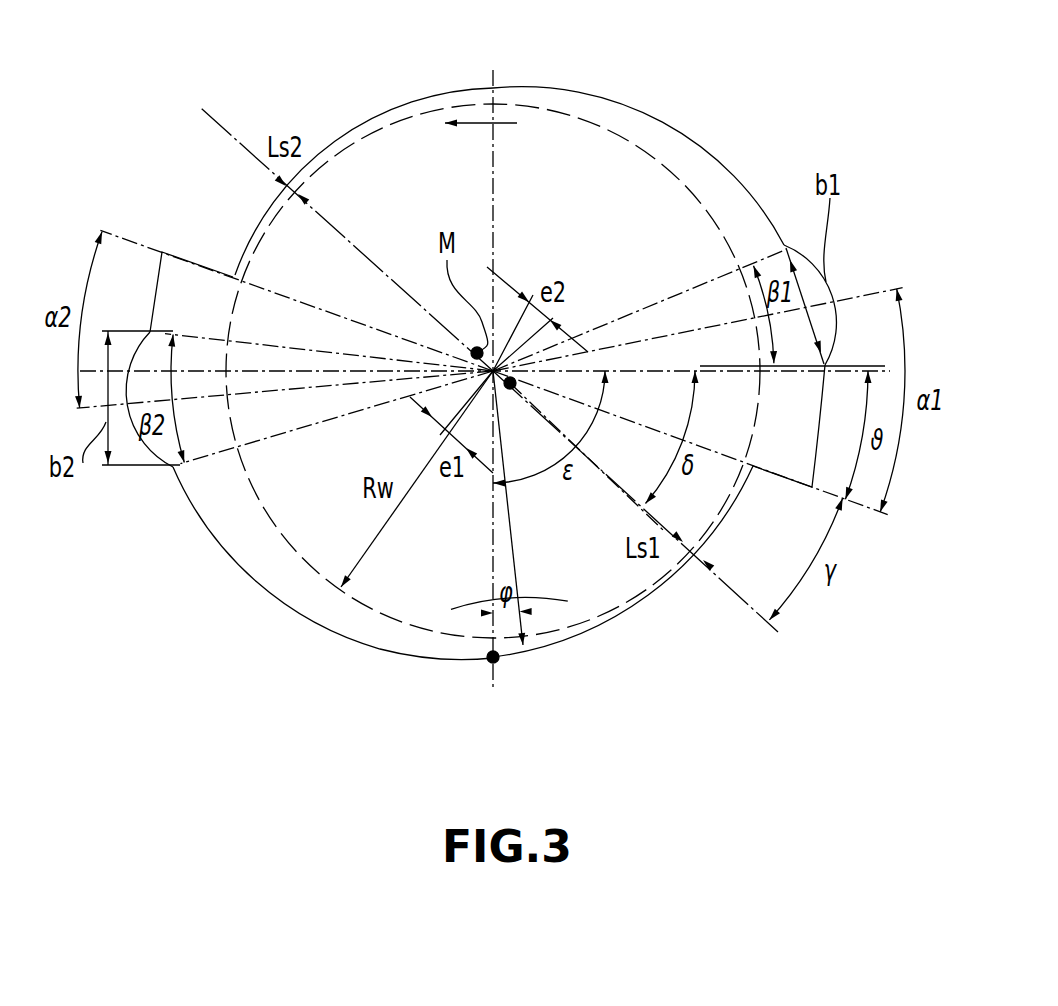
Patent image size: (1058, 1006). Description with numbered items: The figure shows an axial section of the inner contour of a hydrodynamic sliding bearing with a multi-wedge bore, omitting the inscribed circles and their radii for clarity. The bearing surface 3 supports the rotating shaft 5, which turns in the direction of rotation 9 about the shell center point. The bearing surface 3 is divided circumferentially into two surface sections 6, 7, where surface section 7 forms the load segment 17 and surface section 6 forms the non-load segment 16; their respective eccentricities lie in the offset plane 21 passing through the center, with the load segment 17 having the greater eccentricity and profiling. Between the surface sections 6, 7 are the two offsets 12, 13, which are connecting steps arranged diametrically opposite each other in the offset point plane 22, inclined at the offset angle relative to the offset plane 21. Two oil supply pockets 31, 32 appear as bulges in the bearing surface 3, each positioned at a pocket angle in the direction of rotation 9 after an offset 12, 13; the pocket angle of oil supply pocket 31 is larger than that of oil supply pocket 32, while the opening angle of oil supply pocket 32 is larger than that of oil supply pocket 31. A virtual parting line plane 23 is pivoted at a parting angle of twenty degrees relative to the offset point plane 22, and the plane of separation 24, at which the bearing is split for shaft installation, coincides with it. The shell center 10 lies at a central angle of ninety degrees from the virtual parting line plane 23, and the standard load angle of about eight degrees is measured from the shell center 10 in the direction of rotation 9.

The bearing surface 3 is at (350, 635).
The rotating shaft 5 is at (633, 140).
The surface section 6 is at (407, 105).
The surface section 7 is at (397, 655).
The direction of rotation 9 is at (505, 122).
The shell center 10 is at (493, 663).
The offset 12 is at (180, 253).
The offset 13 is at (778, 475).
The non-load segment 16 is at (603, 98).
The load segment 17 is at (575, 640).
The offset plane 21 is at (716, 578).
The offset point plane 22 is at (285, 296).
The virtual parting line plane 23 is at (843, 371).
The plane of separation 24 is at (698, 329).
The oil supply pocket 31 is at (805, 253).
The oil supply pocket 32 is at (147, 455).